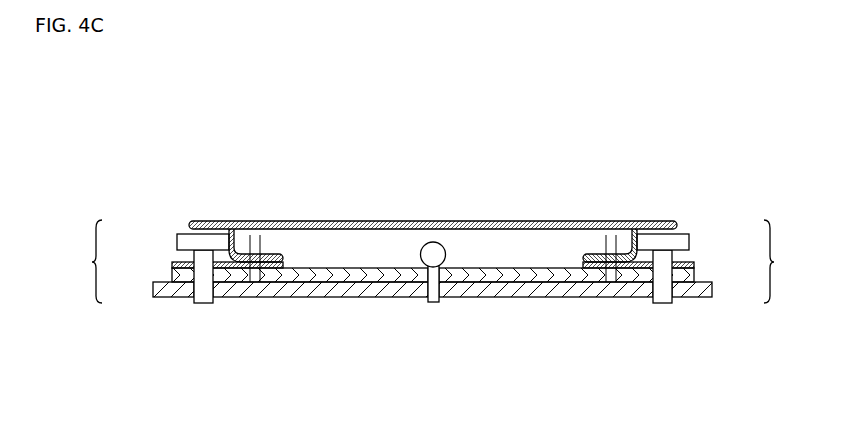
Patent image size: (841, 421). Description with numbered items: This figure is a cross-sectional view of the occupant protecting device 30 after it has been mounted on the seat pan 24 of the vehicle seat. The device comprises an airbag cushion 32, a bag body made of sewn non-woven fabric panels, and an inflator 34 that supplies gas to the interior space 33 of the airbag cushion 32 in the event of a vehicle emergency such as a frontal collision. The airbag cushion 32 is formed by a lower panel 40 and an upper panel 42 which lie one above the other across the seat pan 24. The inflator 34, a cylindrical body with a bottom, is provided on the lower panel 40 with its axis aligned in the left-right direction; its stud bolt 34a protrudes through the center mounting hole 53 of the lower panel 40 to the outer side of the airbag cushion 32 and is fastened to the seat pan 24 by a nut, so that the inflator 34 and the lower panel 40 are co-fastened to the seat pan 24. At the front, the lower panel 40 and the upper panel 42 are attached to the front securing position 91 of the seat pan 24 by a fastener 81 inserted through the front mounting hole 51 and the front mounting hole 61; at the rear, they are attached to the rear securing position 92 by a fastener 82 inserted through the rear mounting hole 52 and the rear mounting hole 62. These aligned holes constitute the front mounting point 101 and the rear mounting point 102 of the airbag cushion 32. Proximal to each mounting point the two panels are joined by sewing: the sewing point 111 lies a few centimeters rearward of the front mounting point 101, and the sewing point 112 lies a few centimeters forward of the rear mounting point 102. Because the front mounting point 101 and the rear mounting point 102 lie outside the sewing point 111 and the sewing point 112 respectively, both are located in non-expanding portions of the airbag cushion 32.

The occupant protecting device 30 is at (534, 102).
The airbag cushion 32 is at (534, 203).
The interior space 33 is at (390, 243).
The inflator 34 is at (417, 271).
The stud bolt 34a is at (428, 296).
The lower panel 40 is at (323, 275).
The upper panel 42 is at (355, 221).
The seat pan 24 is at (507, 285).
The front mounting hole 51 is at (172, 270).
The rear mounting hole 52 is at (711, 283).
The center mounting hole 53 is at (443, 293).
The front mounting hole 61 is at (173, 262).
The rear mounting hole 62 is at (688, 263).
The fastener 81 is at (203, 292).
The fastener 82 is at (664, 292).
The front securing position 91 is at (188, 283).
The rear securing position 92 is at (638, 293).
The front mounting point 101 is at (167, 301).
The rear mounting point 102 is at (698, 296).
The sewing point 111 is at (274, 238).
The sewing point 112 is at (601, 238).